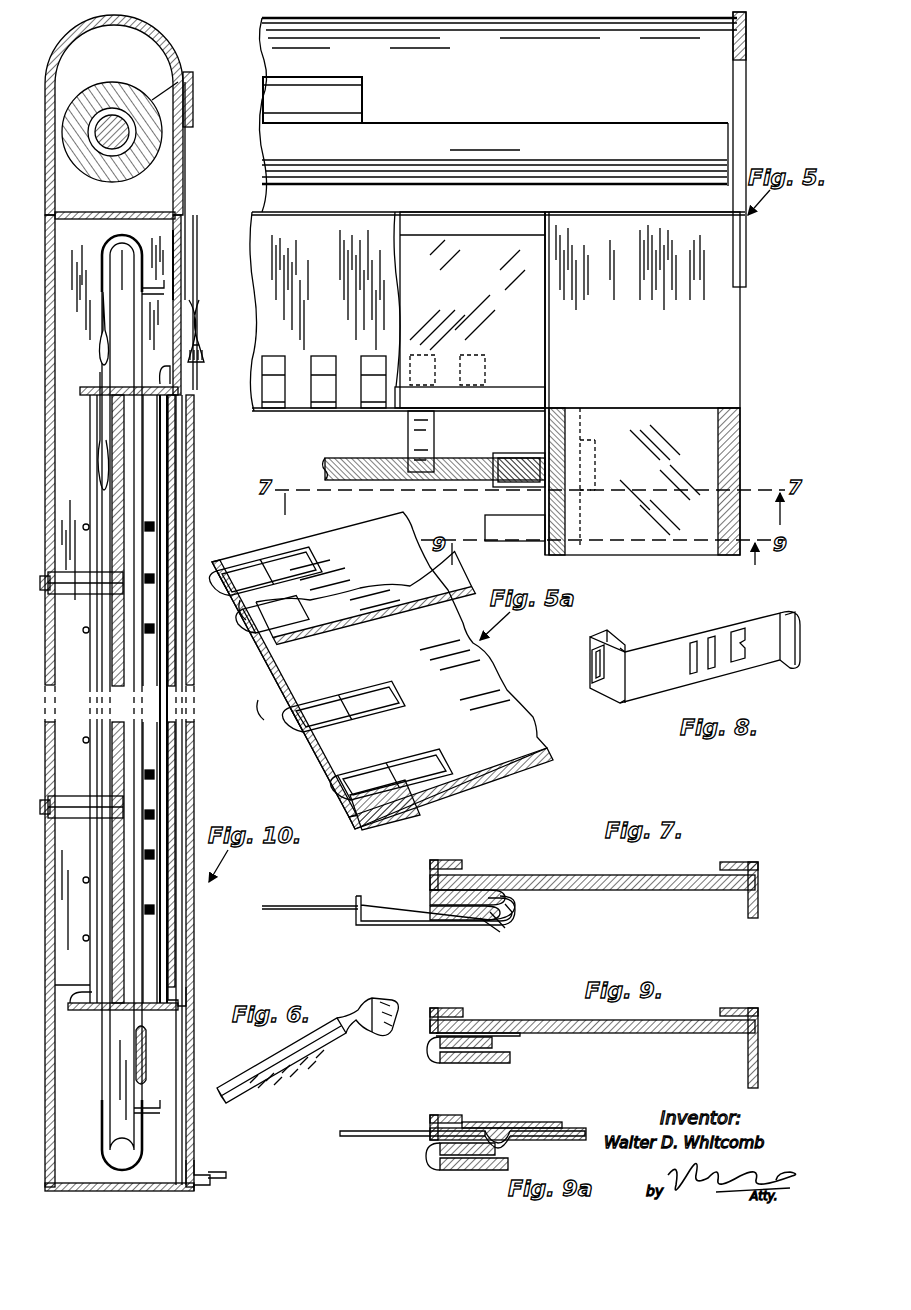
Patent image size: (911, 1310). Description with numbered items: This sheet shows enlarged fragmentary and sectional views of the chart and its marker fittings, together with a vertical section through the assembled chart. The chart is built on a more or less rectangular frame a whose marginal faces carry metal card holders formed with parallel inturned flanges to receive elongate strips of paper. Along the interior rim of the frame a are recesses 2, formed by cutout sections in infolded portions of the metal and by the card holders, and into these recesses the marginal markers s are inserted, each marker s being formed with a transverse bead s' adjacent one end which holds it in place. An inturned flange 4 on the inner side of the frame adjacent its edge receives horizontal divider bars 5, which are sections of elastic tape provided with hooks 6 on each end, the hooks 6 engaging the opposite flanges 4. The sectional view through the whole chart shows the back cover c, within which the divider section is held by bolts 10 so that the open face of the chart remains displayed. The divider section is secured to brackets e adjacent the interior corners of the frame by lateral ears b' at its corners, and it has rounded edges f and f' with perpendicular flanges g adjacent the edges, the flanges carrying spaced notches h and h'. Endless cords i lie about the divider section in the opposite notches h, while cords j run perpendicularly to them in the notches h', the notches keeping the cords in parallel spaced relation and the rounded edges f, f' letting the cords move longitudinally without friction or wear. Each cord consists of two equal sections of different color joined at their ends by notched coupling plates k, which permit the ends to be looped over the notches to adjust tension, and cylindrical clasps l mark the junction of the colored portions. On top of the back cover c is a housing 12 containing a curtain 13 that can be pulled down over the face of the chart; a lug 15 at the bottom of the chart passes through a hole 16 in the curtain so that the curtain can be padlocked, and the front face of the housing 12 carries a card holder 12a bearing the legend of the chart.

In FIG. 10, the housing 12 is at (50, 55).
In FIG. 5, the housing 12 is at (720, 82).
In FIG. 10, the card holder 12a is at (194, 78).
In FIG. 10, the curtain 13 is at (186, 190).
In FIG. 10, the hole 16 is at (204, 305).
In FIG. 10, the frame a is at (196, 333).
In FIG. 5, the frame a is at (725, 348).
In FIG. 5A, the frame a is at (515, 755).
In FIG. 7, the frame a is at (680, 890).
In FIG. 9, the frame a is at (680, 1034).
In FIG. 9A, the frame a is at (582, 1142).
In FIG. 10, the lateral ear b' is at (101, 706).
In FIG. 10, the back cover c is at (54, 982).
In FIG. 10, the bracket e is at (172, 380).
In FIG. 10, the rounded edge f is at (56, 699).
In FIG. 10, the rounded edge f' is at (113, 719).
In FIG. 10, the perpendicular flange g is at (150, 492).
In FIG. 10, the notch h is at (192, 691).
In FIG. 10, the notch h' is at (150, 688).
In FIG. 10, the cord i is at (82, 528).
In FIG. 10, the cord j is at (145, 458).
In FIG. 10, the coupling plate k is at (98, 372).
In FIG. 10, the cylindrical clasp l is at (133, 1060).
In FIG. 10, the recess 2 is at (165, 820).
In FIG. 5, the recess 2 is at (276, 395).
In FIG. 5A, the recess 2 is at (290, 700).
In FIG. 9, the recess 2 is at (428, 1040).
In FIG. 9A, the recess 2 is at (430, 1150).
In FIG. 5A, the inturned flange 4 is at (418, 800).
In FIG. 7, the inturned flange 4 is at (515, 915).
In FIG. 9, the inturned flange 4 is at (497, 1064).
In FIG. 5, the divider bar 5 is at (466, 458).
In FIG. 7, the divider bar 5 is at (314, 910).
In FIG. 5, the hook 6 is at (518, 453).
In FIG. 8, the hook 6 is at (660, 648).
In FIG. 7, the hook 6 is at (416, 926).
In FIG. 10, the bolt 10 is at (44, 580).
In FIG. 10, the lug 15 is at (205, 1180).
In FIG. 5, the marker s is at (465, 486).
In FIG. 6, the marker s is at (281, 1060).
In FIG. 9A, the marker s is at (462, 1145).
In FIG. 6, the transverse bead s' is at (367, 1037).
In FIG. 9A, the transverse bead s' is at (513, 1147).